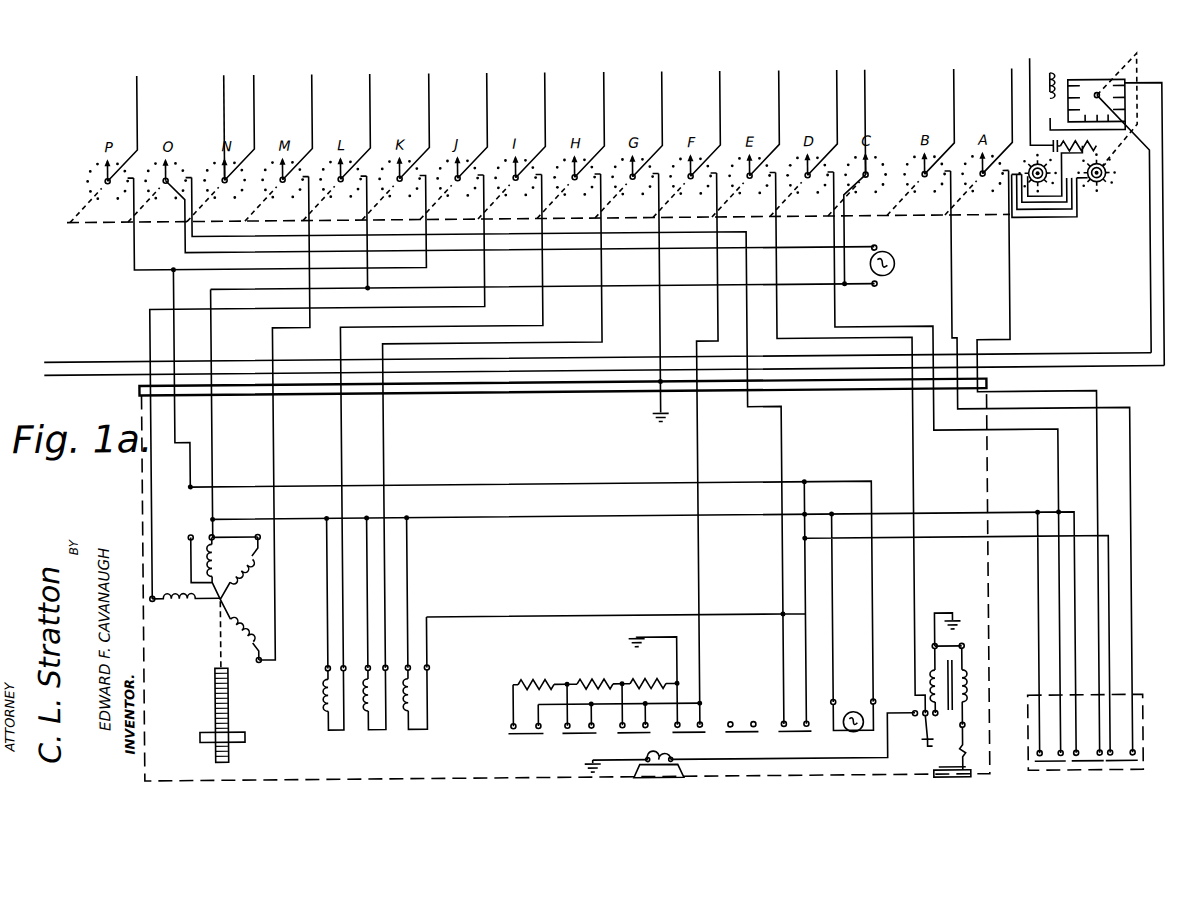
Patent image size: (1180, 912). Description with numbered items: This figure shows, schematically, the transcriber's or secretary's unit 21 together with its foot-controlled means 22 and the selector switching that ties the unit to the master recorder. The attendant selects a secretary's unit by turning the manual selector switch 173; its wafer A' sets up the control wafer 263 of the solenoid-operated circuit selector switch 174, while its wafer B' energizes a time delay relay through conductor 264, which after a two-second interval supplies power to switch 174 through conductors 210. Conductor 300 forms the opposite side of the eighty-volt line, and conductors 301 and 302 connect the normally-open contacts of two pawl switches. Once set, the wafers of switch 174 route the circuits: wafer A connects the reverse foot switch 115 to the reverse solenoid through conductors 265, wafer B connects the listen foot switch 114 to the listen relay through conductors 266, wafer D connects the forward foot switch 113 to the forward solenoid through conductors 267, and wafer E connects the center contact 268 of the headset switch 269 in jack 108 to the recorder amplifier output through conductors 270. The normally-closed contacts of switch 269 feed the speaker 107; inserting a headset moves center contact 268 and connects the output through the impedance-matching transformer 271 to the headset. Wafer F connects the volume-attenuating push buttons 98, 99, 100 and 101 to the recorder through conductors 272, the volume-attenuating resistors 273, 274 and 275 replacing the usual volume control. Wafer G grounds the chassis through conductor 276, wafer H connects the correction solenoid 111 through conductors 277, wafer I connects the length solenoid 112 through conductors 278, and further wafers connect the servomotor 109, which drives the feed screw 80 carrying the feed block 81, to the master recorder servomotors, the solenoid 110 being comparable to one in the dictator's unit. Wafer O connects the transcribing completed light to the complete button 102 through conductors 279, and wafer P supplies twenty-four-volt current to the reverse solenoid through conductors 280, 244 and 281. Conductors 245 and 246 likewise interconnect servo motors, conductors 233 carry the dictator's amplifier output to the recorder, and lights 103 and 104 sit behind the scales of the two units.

The conductor 281 is at (128, 118).
The conductor 302 is at (216, 117).
The conductor 301 is at (246, 117).
The conductor 246 is at (303, 116).
The conductor 245 is at (362, 116).
The conductor 280 is at (157, 288).
The conductor 244 is at (326, 326).
The conductors 278 is at (334, 473).
The conductors 277 is at (386, 470).
The grounded conductor 276 is at (649, 313).
The conductors 272 is at (698, 640).
The conductors 270 is at (921, 580).
The conductors 267 is at (1059, 485).
The conductors 233 is at (863, 168).
The conductors 266 is at (1098, 490).
The conductors 265 is at (1131, 492).
The conductors 279 is at (193, 236).
The conductor 264 is at (83, 371).
The transcriber's unit 21 is at (1001, 496).
The foot-controlled means 22 is at (1026, 697).
The servomotor 109 is at (213, 609).
The feed screw 80 is at (227, 700).
The feed block 81 is at (243, 727).
The length solenoid 112 is at (316, 738).
The correction solenoid 111 is at (363, 738).
The solenoid 110 is at (408, 738).
The volume-attenuating resistor 273 is at (538, 689).
The volume-attenuating resistor 274 is at (593, 689).
The volume-attenuating resistor 275 is at (650, 681).
The push button 98 is at (515, 736).
The push button 99 is at (575, 736).
The push button 100 is at (633, 736).
The push button 101 is at (683, 736).
The complete button 102 is at (735, 736).
The light 103 is at (788, 736).
The light 104 is at (866, 736).
The speaker 107 is at (666, 779).
The jack 108 is at (934, 789).
The center contact 268 is at (921, 714).
The headset switch 269 is at (921, 757).
The impedance-matching transformer 271 is at (966, 681).
The forward foot switch 113 is at (1046, 774).
The listen foot switch 114 is at (1088, 774).
The reverse foot switch 115 is at (1112, 774).
The conductors 210 is at (1033, 66).
The conductor 300 is at (1053, 77).
The manual selector switch 173 is at (1105, 75).
The solenoid-operated circuit selector switch 174 is at (1079, 220).
The control wafer 263 is at (1043, 200).